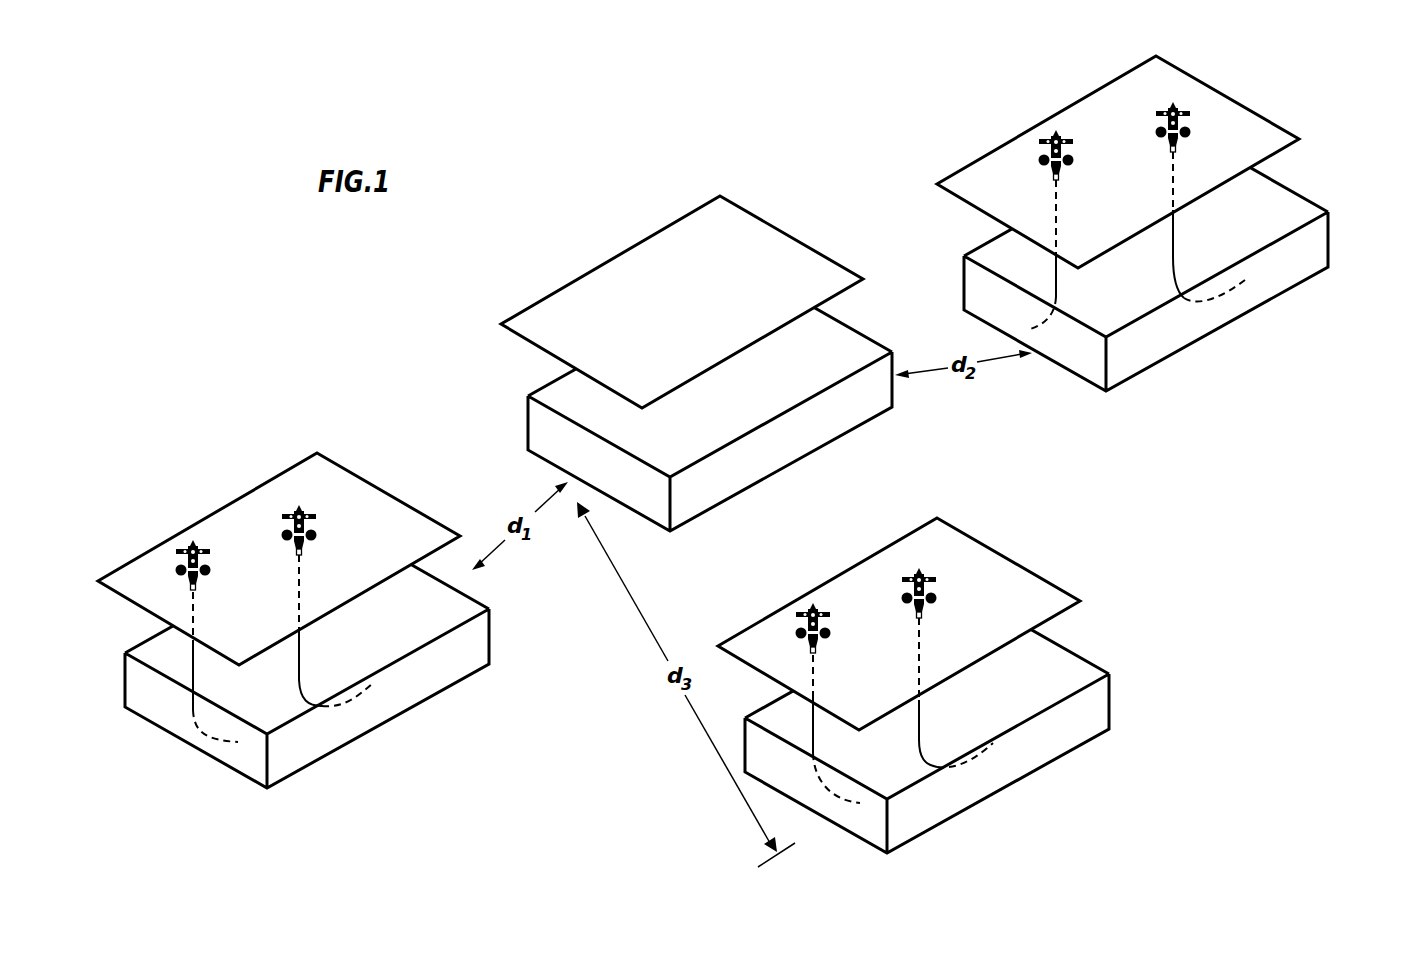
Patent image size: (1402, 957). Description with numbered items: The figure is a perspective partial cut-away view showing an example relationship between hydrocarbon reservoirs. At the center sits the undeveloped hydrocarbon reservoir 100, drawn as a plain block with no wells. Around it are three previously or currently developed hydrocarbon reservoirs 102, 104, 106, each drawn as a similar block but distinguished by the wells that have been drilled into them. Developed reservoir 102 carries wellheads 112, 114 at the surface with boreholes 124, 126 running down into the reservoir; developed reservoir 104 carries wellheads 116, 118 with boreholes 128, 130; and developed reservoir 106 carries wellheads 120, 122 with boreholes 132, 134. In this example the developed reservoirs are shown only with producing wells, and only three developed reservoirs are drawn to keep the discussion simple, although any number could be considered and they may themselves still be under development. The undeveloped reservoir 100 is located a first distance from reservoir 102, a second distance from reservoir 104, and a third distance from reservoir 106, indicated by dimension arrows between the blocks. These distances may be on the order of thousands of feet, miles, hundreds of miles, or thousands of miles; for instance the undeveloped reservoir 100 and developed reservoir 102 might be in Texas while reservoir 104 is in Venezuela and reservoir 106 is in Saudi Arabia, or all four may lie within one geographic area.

The undeveloped hydrocarbon reservoir 100 is at (767, 404).
The developed hydrocarbon reservoir 102 is at (293, 605).
The developed hydrocarbon reservoir 104 is at (1135, 223).
The developed hydrocarbon reservoir 106 is at (910, 671).
The wellhead 112 is at (195, 545).
The wellhead 114 is at (315, 517).
The wellhead 116 is at (1053, 140).
The wellhead 118 is at (1168, 112).
The wellhead 120 is at (808, 618).
The wellhead 122 is at (933, 578).
The borehole 124 is at (190, 655).
The borehole 126 is at (300, 640).
The borehole 128 is at (1053, 264).
The borehole 130 is at (1175, 233).
The borehole 132 is at (815, 727).
The borehole 134 is at (922, 708).